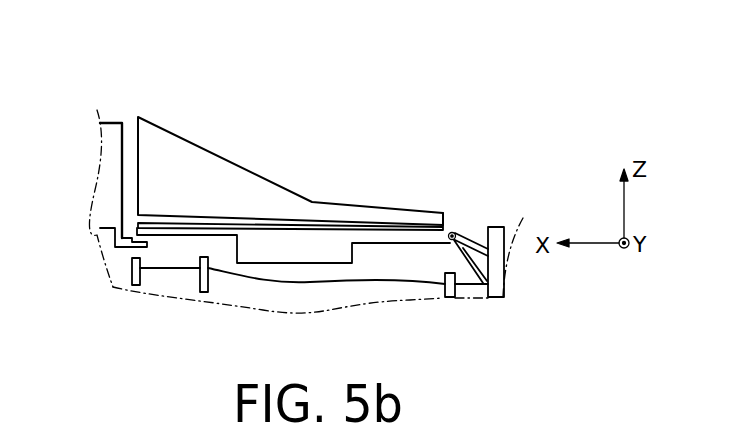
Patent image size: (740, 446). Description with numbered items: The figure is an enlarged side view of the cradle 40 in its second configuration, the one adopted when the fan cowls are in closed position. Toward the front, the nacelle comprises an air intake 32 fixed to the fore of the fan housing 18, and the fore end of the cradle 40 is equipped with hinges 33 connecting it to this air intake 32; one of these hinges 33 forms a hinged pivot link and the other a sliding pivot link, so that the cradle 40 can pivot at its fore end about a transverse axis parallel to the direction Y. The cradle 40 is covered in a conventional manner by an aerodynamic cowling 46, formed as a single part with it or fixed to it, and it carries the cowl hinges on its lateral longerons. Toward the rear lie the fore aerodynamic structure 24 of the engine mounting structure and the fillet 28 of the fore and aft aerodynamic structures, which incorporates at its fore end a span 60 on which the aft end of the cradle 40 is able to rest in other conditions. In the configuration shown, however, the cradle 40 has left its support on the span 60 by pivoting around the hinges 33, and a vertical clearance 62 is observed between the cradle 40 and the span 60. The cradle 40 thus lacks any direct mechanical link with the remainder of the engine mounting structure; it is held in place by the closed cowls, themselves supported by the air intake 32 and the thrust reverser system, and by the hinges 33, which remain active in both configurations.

The fan housing 18 is at (273, 300).
The fore aerodynamic structure 24 is at (204, 151).
The fillet 28 is at (122, 120).
The air intake 32 is at (500, 273).
The hinges 33 is at (457, 233).
The cradle 40 is at (355, 253).
The aerodynamic cowling 46 is at (270, 182).
The span 60 is at (147, 247).
The vertical clearance 62 is at (117, 238).